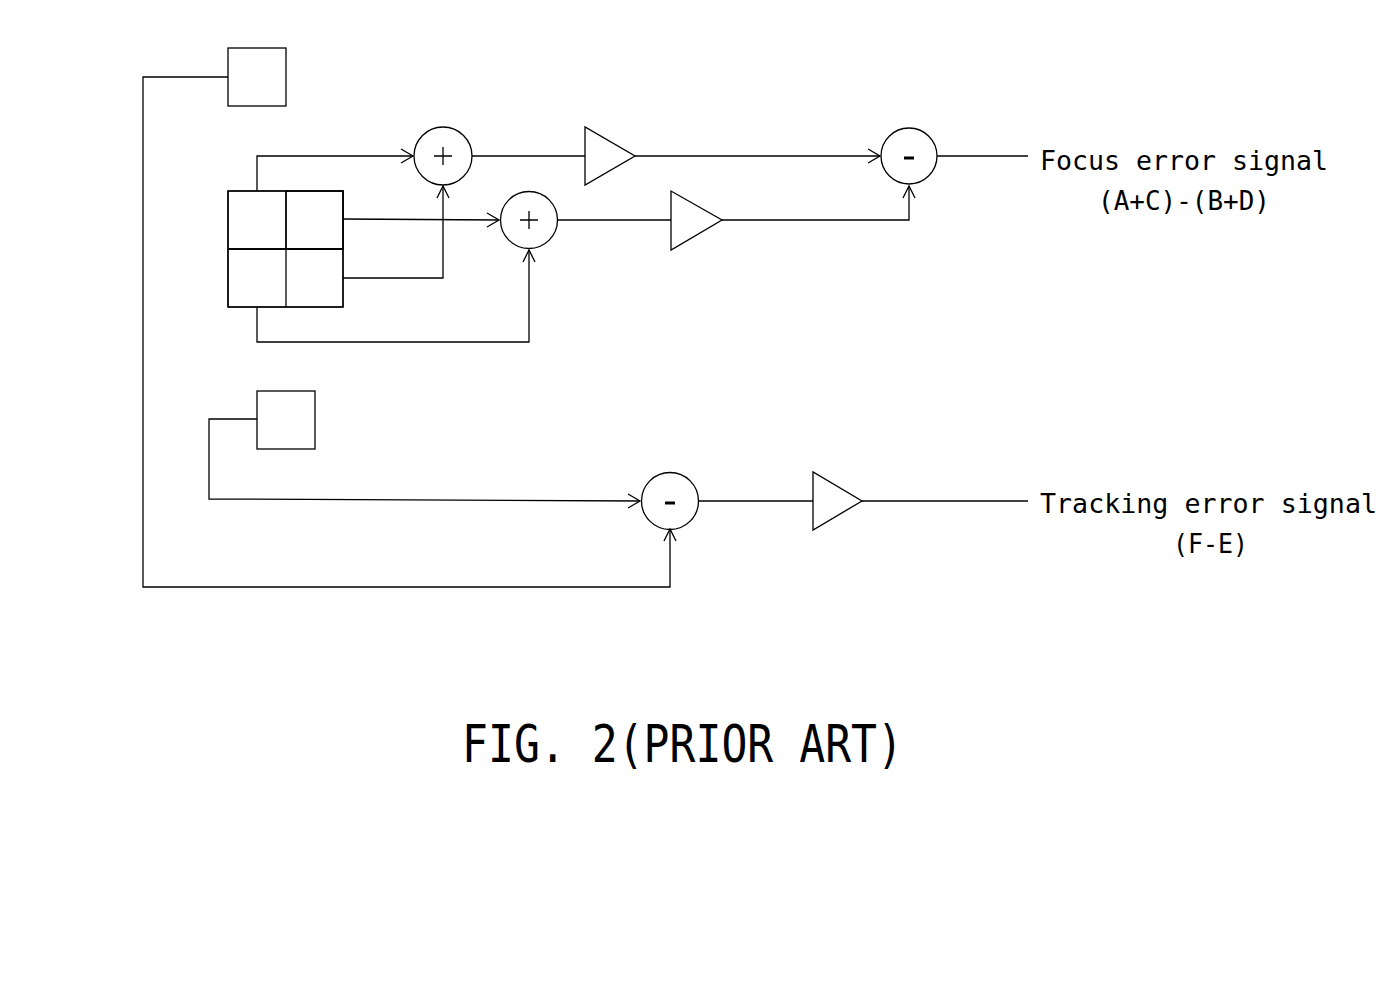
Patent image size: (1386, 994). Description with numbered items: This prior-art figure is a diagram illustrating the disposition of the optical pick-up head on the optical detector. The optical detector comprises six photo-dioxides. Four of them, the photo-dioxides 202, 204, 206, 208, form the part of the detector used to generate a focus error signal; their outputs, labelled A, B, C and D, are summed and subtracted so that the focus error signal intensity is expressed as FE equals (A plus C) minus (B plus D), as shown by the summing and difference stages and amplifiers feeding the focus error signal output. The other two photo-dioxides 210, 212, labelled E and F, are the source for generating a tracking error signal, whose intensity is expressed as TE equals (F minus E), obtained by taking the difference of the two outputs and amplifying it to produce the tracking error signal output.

The photo-dioxide 202 is at (228, 219).
The photo-dioxide 204 is at (228, 278).
The photo-dioxide 206 is at (343, 295).
The photo-dioxide 208 is at (343, 207).
The photo-dioxide 210 is at (257, 48).
The photo-dioxide 212 is at (315, 419).